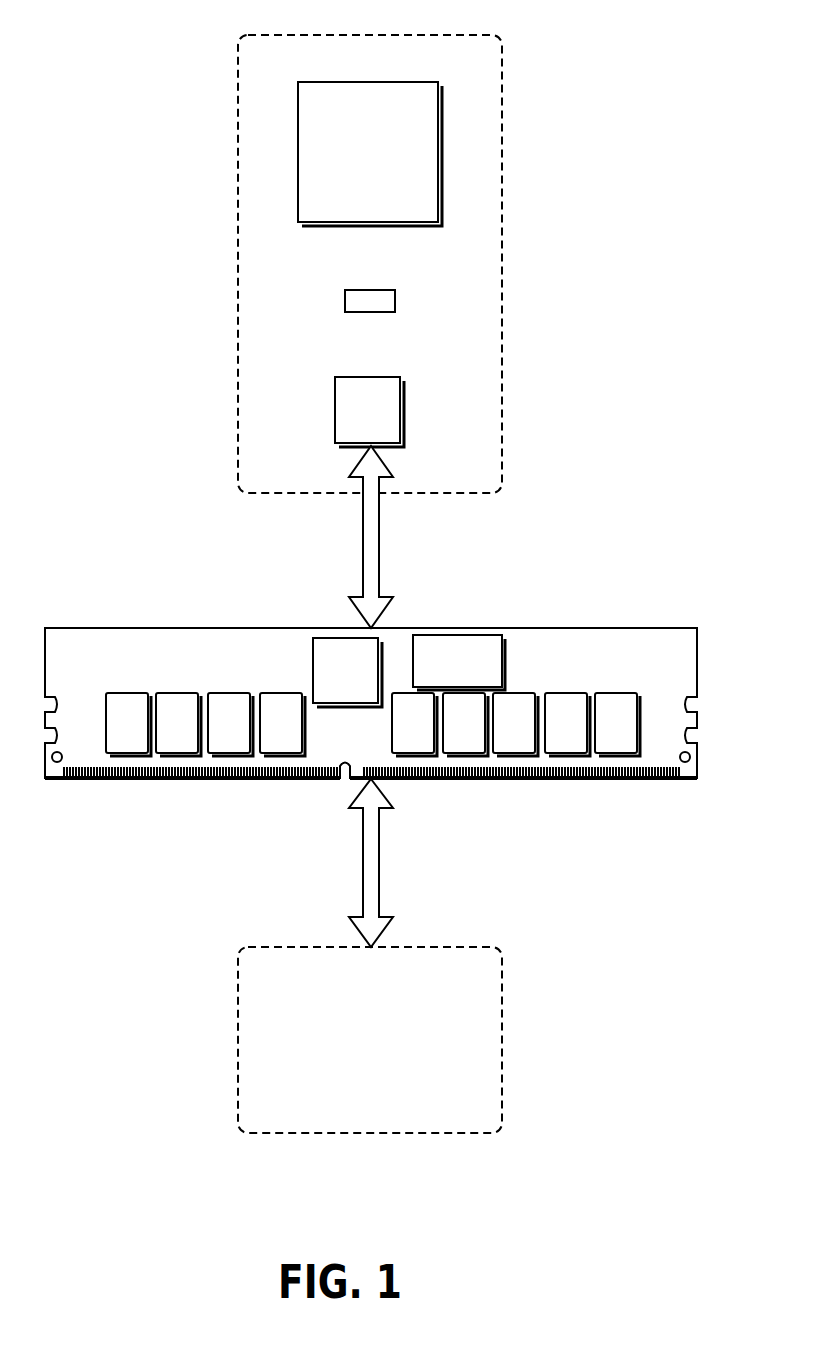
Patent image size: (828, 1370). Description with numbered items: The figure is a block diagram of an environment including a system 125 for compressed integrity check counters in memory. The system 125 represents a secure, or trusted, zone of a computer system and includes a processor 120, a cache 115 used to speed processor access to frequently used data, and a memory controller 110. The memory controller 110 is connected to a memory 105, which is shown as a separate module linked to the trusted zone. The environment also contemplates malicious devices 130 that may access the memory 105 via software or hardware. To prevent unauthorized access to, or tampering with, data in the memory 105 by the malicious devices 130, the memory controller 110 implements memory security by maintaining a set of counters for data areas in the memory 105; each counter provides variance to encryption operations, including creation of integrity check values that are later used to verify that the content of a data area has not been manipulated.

The memory 105 is at (118, 628).
The memory controller 110 is at (335, 402).
The cache 115 is at (345, 300).
The processor 120 is at (300, 155).
The system 125 is at (295, 34).
The malicious devices 130 is at (255, 946).